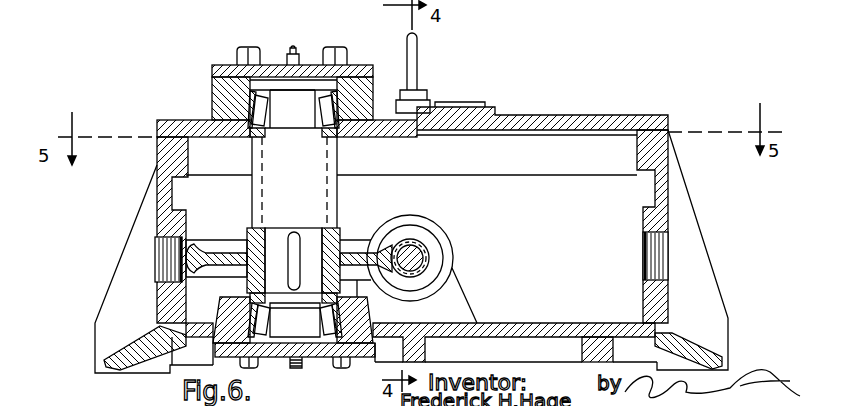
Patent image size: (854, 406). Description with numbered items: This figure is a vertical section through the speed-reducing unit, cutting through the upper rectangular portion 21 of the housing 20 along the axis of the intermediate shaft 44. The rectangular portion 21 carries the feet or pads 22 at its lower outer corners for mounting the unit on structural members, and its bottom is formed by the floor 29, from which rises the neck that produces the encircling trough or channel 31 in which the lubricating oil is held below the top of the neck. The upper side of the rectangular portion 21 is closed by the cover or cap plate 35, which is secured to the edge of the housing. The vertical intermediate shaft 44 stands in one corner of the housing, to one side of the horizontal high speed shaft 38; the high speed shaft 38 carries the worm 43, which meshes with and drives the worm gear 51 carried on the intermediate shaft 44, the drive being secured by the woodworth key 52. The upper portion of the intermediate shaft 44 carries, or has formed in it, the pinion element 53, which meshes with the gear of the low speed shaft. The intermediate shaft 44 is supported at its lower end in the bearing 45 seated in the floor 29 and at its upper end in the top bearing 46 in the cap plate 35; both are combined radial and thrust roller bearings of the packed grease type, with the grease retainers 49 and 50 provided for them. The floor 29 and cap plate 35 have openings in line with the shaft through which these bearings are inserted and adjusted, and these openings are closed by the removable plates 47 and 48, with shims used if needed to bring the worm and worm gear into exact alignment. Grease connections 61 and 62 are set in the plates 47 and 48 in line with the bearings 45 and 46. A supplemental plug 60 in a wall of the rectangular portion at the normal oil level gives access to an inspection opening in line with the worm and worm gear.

The housing 20 is at (157, 165).
The upper rectangular portion 21 is at (655, 158).
The feet or pads 22 is at (760, 351).
The floor 29 is at (543, 325).
The encircling trough or channel 31 is at (593, 305).
The cover or cap plate 35 is at (557, 115).
The high speed shaft 38 is at (432, 254).
The worm 43 is at (418, 235).
The intermediate shaft 44 is at (307, 245).
The bearing 45 is at (318, 358).
The top bearing 46 is at (247, 110).
The removable plate 47 is at (357, 358).
The removable plate 48 is at (360, 64).
The grease retainer 49 is at (368, 309).
The grease retainer 50 is at (332, 130).
The worm gear 51 is at (207, 235).
The woodworth key 52 is at (292, 275).
The pinion element 53 is at (307, 163).
The supplemental plug 60 is at (155, 260).
The grease connection 61 is at (297, 360).
The grease connection 62 is at (296, 46).